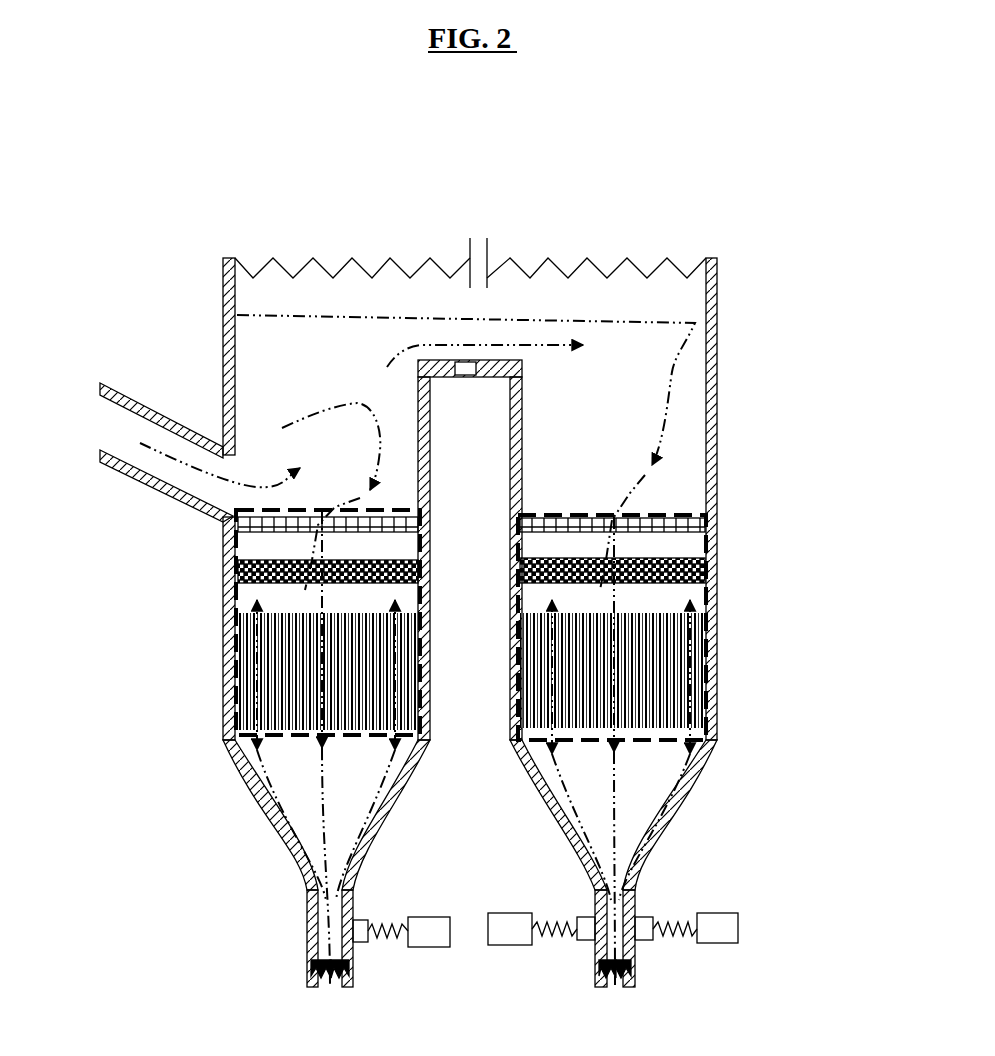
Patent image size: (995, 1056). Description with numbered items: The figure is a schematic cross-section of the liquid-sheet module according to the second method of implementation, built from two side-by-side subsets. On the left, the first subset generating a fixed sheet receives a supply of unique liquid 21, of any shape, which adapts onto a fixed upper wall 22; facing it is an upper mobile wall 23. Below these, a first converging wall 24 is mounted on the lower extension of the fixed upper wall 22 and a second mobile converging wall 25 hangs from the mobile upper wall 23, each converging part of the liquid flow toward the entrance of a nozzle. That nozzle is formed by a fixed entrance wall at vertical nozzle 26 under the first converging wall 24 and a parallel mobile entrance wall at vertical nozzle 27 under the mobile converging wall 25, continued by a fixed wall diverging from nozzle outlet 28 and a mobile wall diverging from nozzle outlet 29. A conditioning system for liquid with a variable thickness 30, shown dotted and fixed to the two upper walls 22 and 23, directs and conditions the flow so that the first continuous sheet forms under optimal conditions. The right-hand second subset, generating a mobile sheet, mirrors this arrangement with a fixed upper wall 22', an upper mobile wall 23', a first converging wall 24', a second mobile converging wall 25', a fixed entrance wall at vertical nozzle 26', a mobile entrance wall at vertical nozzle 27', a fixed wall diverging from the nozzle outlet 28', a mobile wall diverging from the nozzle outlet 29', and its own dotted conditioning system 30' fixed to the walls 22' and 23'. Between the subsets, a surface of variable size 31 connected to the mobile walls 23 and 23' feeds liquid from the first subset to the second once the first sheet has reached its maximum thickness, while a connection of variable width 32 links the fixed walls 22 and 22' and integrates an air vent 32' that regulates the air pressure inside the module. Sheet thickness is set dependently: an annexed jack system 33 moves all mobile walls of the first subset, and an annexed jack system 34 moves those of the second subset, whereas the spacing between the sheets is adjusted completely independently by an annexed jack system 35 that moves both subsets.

The supply of unique liquid 21 is at (135, 432).
The fixed upper wall 22 is at (171, 499).
The fixed upper wall 22' is at (767, 499).
The upper mobile wall 23 is at (470, 466).
The upper mobile wall 23' is at (487, 558).
The first converging wall 24 is at (230, 815).
The first converging wall 24' is at (711, 815).
The second mobile converging wall 25 is at (402, 815).
The second mobile converging wall 25' is at (527, 815).
The fixed entrance wall at vertical nozzle 26 is at (279, 937).
The fixed entrance wall at vertical nozzle 26' is at (686, 914).
The mobile entrance wall at vertical nozzle 27 is at (386, 901).
The mobile entrance wall at vertical nozzle 27' is at (553, 899).
The fixed wall diverging from nozzle outlet 28 is at (262, 994).
The fixed wall diverging from nozzle outlet 28' is at (708, 986).
The mobile wall diverging from nozzle outlet 29 is at (401, 987).
The mobile wall diverging from nozzle outlet 29' is at (549, 988).
The conditioning system for liquid with a variable thickness 30 is at (271, 630).
The conditioning system for liquid with a variable thickness 30' is at (575, 634).
The surface of variable size 31 is at (468, 356).
The connection of variable width 32 is at (315, 247).
The air vent 32' is at (596, 240).
The annexed jack system 33 is at (430, 930).
The annexed jack system 34 is at (508, 930).
The annexed jack system 35 is at (716, 930).